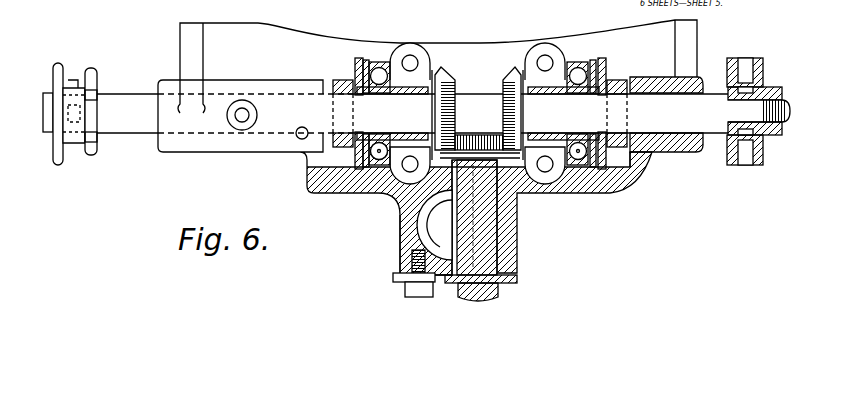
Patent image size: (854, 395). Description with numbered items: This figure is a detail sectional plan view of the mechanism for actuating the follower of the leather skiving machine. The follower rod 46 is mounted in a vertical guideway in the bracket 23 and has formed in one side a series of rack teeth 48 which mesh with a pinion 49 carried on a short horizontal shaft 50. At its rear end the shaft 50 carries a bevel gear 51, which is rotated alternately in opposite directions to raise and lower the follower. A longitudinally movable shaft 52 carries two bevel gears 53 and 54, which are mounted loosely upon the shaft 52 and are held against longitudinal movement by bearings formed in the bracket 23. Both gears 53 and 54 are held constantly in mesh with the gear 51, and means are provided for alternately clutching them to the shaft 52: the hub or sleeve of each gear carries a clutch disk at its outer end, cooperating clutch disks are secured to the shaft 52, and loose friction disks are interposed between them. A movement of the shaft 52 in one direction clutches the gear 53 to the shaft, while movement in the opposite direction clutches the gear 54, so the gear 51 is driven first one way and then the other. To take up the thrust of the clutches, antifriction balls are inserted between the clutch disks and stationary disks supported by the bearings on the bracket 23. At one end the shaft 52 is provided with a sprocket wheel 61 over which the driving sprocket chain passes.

The bracket 23 is at (193, 47).
The rod 46 is at (400, 225).
The rack teeth 48 is at (447, 212).
The pinion 49 is at (505, 229).
The short horizontal shaft 50 is at (517, 250).
The bevel gear 51 is at (468, 143).
The longitudinally movable shaft 52 is at (416, 111).
The bevel gear 53 is at (513, 73).
The bevel gear 54 is at (443, 78).
The sprocket wheel 61 is at (91, 76).